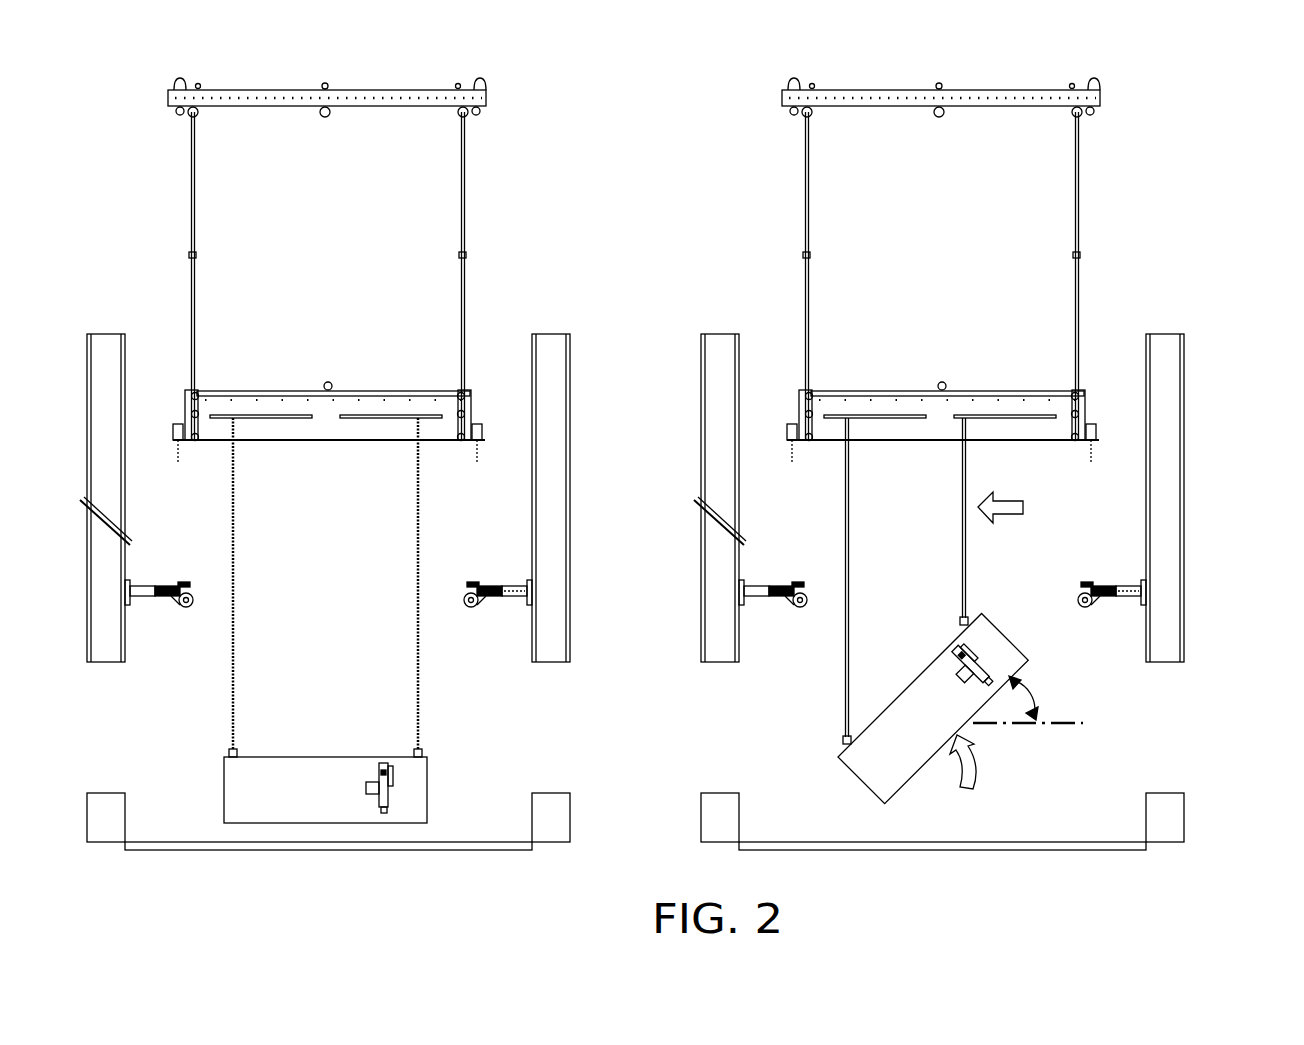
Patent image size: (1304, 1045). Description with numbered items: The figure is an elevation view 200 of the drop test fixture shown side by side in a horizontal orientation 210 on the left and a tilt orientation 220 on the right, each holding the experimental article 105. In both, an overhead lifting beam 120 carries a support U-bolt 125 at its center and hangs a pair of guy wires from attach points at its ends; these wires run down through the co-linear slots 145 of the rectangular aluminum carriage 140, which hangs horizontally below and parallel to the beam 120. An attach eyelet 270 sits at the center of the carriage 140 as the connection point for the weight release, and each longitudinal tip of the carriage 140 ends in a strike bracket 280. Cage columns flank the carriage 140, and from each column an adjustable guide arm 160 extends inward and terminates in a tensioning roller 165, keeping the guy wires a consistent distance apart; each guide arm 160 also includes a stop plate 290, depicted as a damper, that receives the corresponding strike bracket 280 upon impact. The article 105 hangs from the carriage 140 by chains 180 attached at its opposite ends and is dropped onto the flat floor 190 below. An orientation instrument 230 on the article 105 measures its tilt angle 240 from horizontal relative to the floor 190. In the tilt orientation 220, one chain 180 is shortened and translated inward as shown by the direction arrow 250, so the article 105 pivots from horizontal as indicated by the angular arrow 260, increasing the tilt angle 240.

The elevation view 200 is at (693, 63).
The overhead lifting beam 120 is at (257, 107).
The support U-bolt 125 is at (940, 117).
The attach eyelet 270 is at (327, 382).
The strike bracket 280 is at (475, 420).
The co-linear slots 145 is at (873, 412).
The carriage 140 is at (320, 428).
The guide arm 160 is at (148, 605).
The tensioning roller 165 is at (467, 605).
The orientation instrument 230 is at (382, 757).
The experimental article 105 is at (308, 792).
The horizontal orientation 210 is at (581, 365).
The tilt orientation 220 is at (1195, 365).
The stop plate 290 is at (790, 585).
The chains 180 is at (962, 538).
The direction arrow 250 is at (1003, 518).
The tilt angle 240 is at (1037, 700).
The angular arrow 260 is at (990, 773).
The floor 190 is at (802, 840).